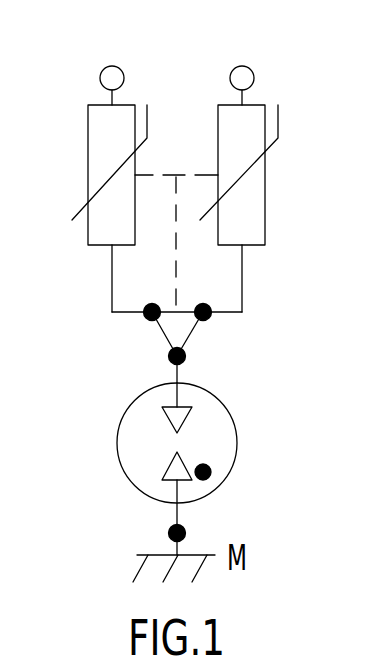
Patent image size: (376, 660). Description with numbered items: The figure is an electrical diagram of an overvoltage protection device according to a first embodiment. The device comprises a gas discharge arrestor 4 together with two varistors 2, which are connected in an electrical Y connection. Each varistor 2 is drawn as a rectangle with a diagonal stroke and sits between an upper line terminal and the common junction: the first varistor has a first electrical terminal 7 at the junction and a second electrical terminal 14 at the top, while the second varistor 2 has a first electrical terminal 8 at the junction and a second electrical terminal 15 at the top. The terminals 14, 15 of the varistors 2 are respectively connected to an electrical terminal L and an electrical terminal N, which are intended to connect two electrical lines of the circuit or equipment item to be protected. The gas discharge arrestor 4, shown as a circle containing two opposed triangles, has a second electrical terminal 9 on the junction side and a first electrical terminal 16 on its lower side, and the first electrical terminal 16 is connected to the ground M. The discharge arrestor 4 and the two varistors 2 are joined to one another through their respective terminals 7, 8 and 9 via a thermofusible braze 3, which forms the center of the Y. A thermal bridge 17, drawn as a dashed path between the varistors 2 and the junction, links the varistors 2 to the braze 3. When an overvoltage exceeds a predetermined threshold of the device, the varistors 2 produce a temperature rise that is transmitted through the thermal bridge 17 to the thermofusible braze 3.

The varistor 2 is at (88, 170).
The thermofusible braze 3 is at (193, 327).
The gas discharge arrestor 4 is at (238, 441).
The first electrical terminal 7 is at (143, 314).
The first electrical terminal 8 is at (210, 318).
The second electrical terminal 9 is at (168, 360).
The second electrical terminal 14 is at (100, 78).
The second electrical terminal 15 is at (254, 78).
The first electrical terminal 16 is at (168, 533).
The thermal bridge 17 is at (177, 213).